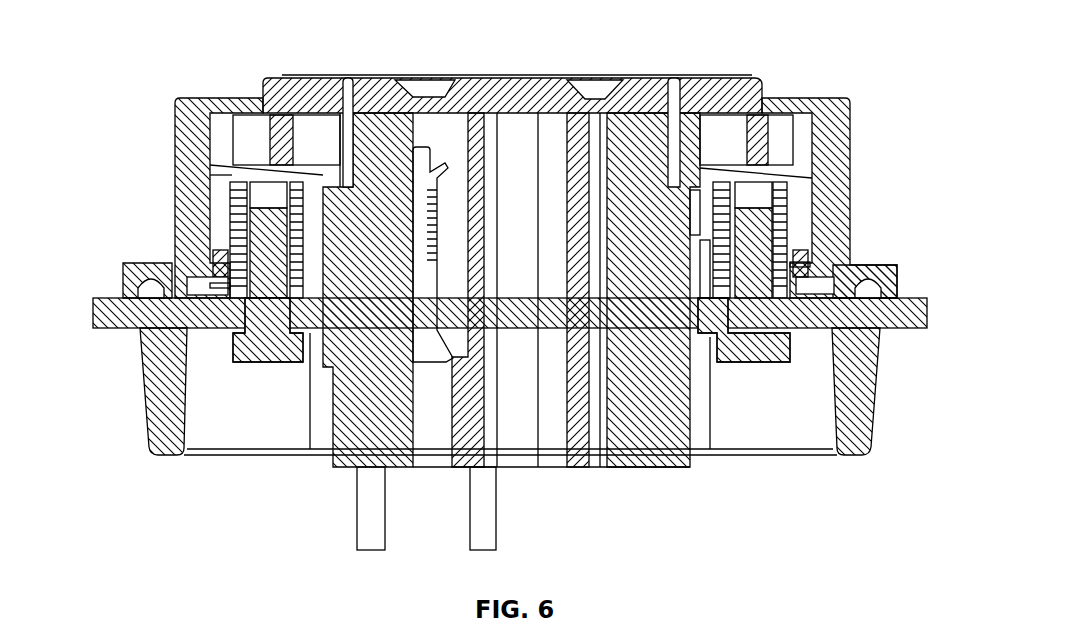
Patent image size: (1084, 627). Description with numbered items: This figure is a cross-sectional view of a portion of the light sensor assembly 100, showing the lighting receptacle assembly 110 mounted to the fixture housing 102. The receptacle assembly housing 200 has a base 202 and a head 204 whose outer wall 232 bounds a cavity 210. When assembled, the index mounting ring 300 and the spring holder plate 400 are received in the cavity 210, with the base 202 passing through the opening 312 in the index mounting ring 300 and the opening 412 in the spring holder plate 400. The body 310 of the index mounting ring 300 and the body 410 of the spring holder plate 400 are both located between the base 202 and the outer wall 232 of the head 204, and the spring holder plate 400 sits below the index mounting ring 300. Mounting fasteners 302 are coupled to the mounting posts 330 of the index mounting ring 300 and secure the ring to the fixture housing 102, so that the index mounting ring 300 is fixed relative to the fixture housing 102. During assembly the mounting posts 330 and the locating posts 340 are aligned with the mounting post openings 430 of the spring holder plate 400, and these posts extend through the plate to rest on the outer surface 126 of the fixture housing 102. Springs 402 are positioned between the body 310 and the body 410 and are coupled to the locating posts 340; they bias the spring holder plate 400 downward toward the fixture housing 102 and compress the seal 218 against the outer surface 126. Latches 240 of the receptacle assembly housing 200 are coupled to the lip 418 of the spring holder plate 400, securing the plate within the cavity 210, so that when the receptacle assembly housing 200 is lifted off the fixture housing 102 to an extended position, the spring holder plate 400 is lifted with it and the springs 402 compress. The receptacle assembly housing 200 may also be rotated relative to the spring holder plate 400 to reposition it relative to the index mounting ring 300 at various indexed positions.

The light sensor assembly 100 is at (138, 78).
The fixture housing 102 is at (128, 370).
The lighting receptacle assembly 110 is at (860, 131).
The outer surface 126 is at (116, 300).
The receptacle assembly housing 200 is at (643, 458).
The base 202 is at (350, 460).
The head 204 is at (176, 152).
The cavity 210 is at (802, 210).
The seal 218 is at (867, 290).
The outer wall 232 is at (805, 247).
The latches 240 is at (216, 266).
The index mounting ring 300 is at (806, 163).
The mounting fasteners 302 is at (272, 356).
The body 310 is at (266, 137).
The opening 312 is at (320, 160).
The mounting posts 330 is at (240, 226).
The locating posts 340 is at (700, 232).
The spring holder plate 400 is at (802, 267).
The springs 402 is at (710, 207).
The body 410 is at (710, 265).
The opening 412 is at (700, 282).
The lip 418 is at (218, 255).
The mounting post openings 430 is at (224, 283).